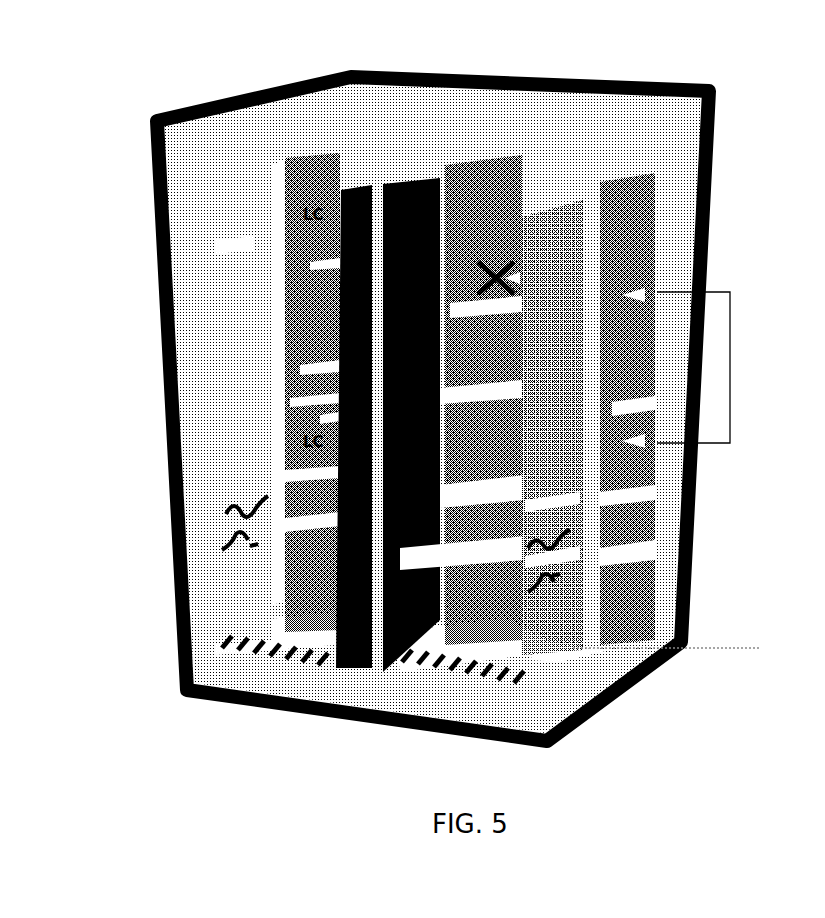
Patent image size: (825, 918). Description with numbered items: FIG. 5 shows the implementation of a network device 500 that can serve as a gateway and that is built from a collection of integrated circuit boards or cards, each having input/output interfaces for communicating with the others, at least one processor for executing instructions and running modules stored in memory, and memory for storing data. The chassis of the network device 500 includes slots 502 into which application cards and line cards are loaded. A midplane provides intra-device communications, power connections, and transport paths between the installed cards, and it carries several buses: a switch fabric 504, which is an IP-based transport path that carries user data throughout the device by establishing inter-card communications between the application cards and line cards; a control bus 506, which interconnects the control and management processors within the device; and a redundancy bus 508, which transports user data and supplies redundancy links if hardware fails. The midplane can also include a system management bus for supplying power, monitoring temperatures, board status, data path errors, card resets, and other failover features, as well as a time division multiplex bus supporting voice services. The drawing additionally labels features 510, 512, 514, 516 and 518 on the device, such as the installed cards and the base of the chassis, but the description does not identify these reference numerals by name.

The network device 500 is at (676, 80).
The slots 502 is at (447, 683).
The switch fabric 504 is at (573, 557).
The control bus 506 is at (610, 502).
The redundancy bus 508 is at (730, 368).
The SPIO module 510 is at (525, 180).
The SMC switch module 512 is at (405, 190).
The PSC power supply card 514 is at (210, 345).
The LC line card 516 is at (630, 173).
The floor air vent 518 is at (477, 620).